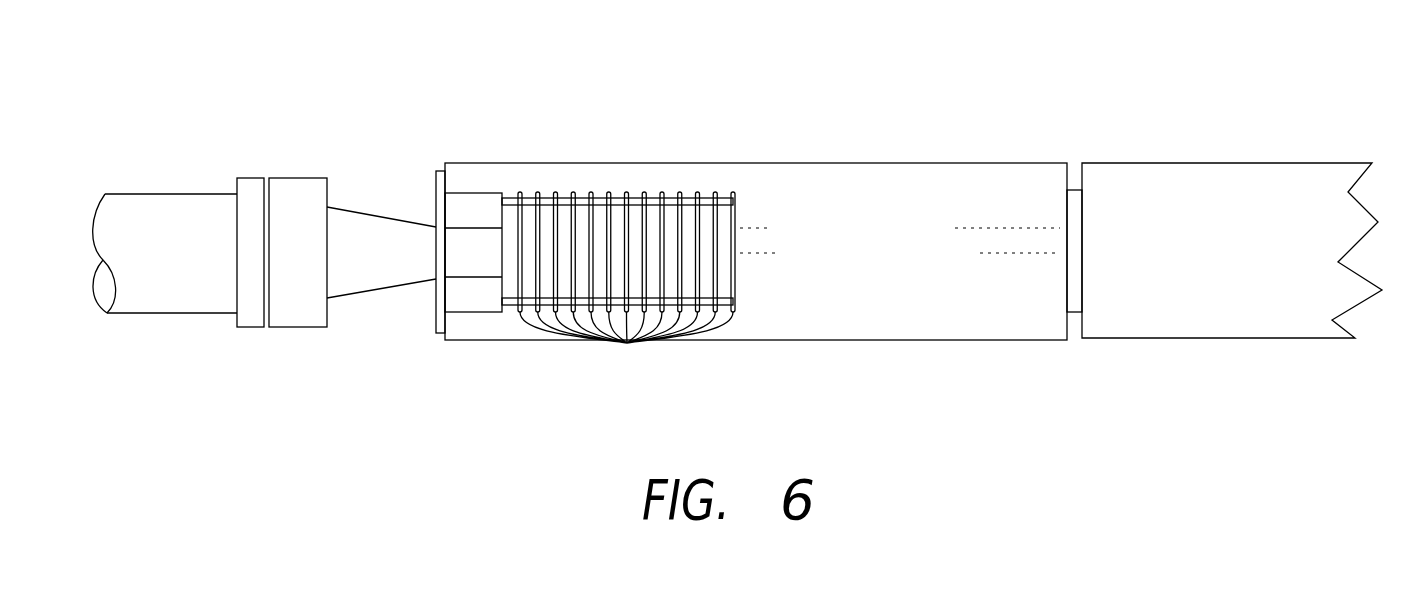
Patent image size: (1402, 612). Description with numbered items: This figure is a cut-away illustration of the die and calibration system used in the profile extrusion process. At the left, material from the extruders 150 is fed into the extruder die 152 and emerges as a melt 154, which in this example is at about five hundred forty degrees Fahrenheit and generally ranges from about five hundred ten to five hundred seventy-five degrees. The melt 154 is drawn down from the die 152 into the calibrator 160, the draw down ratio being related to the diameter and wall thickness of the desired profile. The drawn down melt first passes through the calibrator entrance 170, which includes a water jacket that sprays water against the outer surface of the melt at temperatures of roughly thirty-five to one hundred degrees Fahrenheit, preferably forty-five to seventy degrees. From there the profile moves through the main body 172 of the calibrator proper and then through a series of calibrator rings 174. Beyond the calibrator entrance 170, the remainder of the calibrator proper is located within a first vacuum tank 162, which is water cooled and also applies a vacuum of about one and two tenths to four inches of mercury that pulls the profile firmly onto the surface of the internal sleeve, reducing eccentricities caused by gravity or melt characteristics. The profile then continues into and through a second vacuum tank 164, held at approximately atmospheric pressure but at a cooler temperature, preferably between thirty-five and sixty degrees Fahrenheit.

The extruders 150 is at (158, 168).
The extruder die 152 is at (280, 143).
The melt 154 is at (390, 218).
The calibrator 160 is at (879, 198).
The first vacuum tank 162 is at (773, 163).
The second vacuum tank 164 is at (1228, 163).
The calibrator entrance 170 is at (437, 323).
The main body 172 is at (478, 312).
The calibrator rings 174 is at (626, 342).